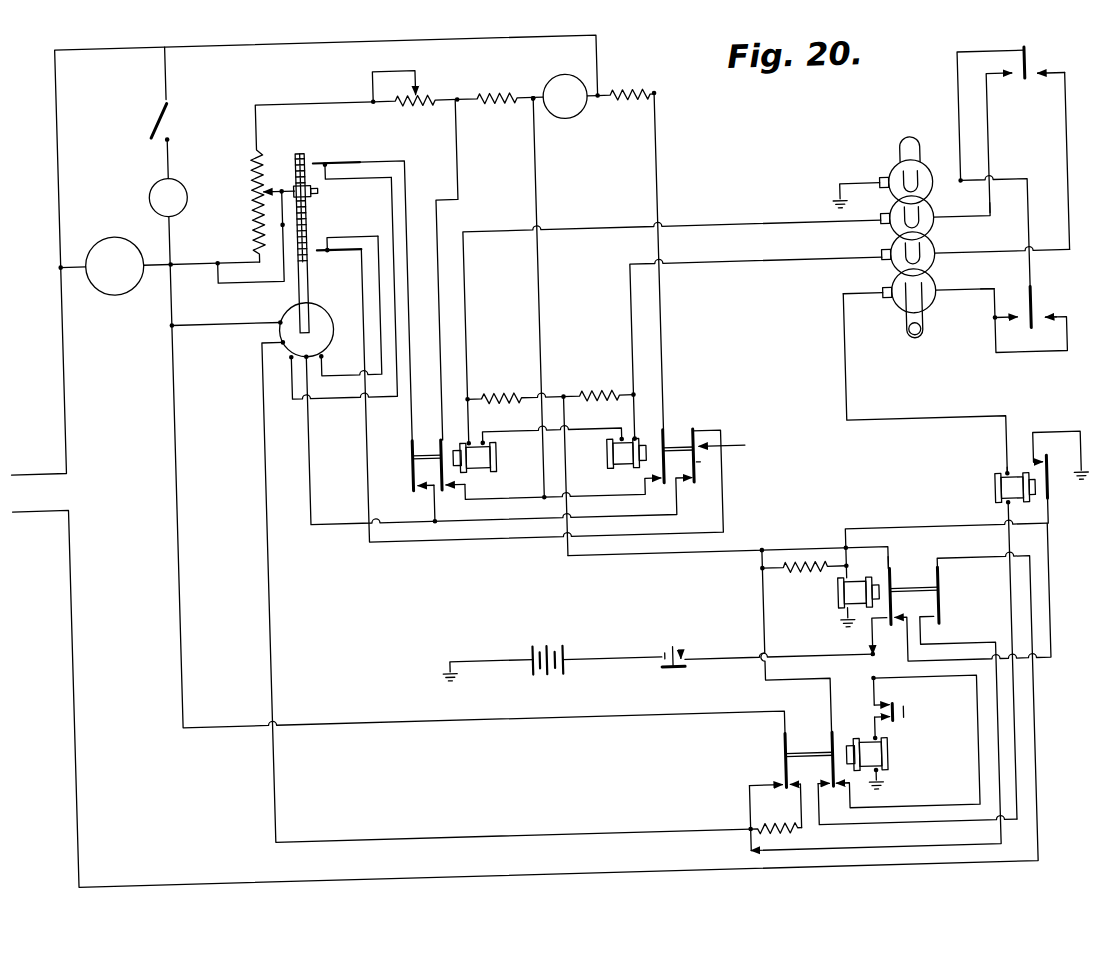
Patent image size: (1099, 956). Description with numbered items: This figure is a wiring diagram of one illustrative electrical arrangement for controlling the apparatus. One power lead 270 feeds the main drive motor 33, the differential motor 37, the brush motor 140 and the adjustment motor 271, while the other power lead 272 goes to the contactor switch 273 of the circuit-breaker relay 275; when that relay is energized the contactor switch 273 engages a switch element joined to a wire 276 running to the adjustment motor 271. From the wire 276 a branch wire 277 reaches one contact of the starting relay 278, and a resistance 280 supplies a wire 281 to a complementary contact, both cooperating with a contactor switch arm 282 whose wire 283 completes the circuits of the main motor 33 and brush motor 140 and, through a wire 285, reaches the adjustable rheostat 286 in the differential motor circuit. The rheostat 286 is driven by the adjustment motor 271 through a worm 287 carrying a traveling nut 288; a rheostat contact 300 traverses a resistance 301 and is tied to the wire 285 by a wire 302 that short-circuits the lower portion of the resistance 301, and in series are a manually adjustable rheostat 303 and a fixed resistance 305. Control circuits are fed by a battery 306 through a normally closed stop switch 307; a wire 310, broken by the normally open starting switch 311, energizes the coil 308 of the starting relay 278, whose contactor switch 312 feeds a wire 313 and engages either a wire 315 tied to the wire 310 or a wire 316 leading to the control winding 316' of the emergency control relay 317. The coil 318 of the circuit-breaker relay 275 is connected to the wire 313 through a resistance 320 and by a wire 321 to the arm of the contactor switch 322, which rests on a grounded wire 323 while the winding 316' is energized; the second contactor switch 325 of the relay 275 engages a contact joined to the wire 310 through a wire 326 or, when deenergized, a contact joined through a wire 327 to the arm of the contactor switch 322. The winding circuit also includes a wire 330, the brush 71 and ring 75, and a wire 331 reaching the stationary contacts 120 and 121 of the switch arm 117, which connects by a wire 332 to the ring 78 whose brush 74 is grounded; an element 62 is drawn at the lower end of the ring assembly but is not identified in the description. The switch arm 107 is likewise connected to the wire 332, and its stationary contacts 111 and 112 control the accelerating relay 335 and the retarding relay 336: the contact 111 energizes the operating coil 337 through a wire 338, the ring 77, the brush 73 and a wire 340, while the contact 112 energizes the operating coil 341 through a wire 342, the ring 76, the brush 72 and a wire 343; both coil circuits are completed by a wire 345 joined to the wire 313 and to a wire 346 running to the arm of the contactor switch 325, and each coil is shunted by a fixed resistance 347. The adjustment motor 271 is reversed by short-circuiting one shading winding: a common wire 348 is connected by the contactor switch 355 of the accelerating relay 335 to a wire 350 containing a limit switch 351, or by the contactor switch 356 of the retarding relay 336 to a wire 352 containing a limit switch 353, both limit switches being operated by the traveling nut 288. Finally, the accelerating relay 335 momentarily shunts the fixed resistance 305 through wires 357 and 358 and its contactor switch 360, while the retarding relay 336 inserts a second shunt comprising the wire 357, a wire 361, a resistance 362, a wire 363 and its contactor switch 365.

The power lead 270 is at (297, 37).
The power lead 272 is at (26, 498).
The brush motor 140 is at (159, 184).
The main drive motor 33 is at (119, 283).
The wire 285 is at (205, 252).
The wire 302 is at (227, 272).
The rheostat contact 300 is at (289, 183).
The resistance 301 is at (263, 182).
The adjustable rheostat 286 is at (251, 149).
The traveling nut 288 is at (327, 186).
The worm 287 is at (318, 215).
The limit switch 351 is at (346, 152).
The wire 350 is at (405, 156).
The limit switch 353 is at (335, 250).
The common wire 348 is at (307, 419).
The wire 352 is at (308, 365).
The adjustment motor 271 is at (281, 322).
The wire 283 is at (174, 386).
The wire 276 is at (263, 465).
The accelerating relay 335 is at (405, 444).
The contactor switch 355 is at (409, 474).
The contactor switch 360 is at (443, 491).
The wire 361 is at (621, 502).
The wire 358 is at (470, 163).
The wire 357 is at (553, 189).
The manually adjustable rheostat 303 is at (438, 94).
The fixed resistance 305 is at (518, 95).
The differential motor 37 is at (586, 114).
The resistance 362 is at (640, 92).
The wire 363 is at (673, 155).
The wire 340 is at (767, 232).
The wire 343 is at (768, 271).
The fixed resistance 347 is at (502, 393).
The operating coil 337 is at (500, 461).
The operating coil 341 is at (605, 460).
The wire 345 is at (560, 556).
The wire 346 is at (769, 551).
The contactor switch 365 is at (667, 431).
The retarding relay 336 is at (741, 433).
The contactor switch 356 is at (700, 467).
The wire 321 is at (841, 540).
The resistance 320 is at (777, 575).
The coil 318 is at (828, 600).
The contactor switch 325 is at (884, 574).
The circuit-breaker relay 275 is at (911, 573).
The contactor switch 273 is at (937, 596).
The wire 313 is at (751, 678).
The wire 326 is at (860, 659).
The wire 310 is at (704, 659).
The stop switch 307 is at (662, 651).
The battery 306 is at (542, 645).
The starting switch 311 is at (898, 722).
The coil 308 is at (885, 762).
The wire 315 is at (893, 815).
The starting relay 278 is at (773, 746).
The contactor switch 312 is at (822, 743).
The contactor switch arm 282 is at (770, 774).
The branch wire 277 is at (738, 791).
The wire 281 is at (789, 812).
The resistance 280 is at (749, 839).
The wire 316 is at (917, 794).
The control winding 316' is at (986, 640).
The emergency control relay 317 is at (991, 479).
The wire 330 is at (848, 354).
The contactor switch 322 is at (1049, 501).
The grounded wire 323 is at (1056, 446).
The wire 327 is at (1046, 604).
The ring 78 is at (932, 172).
The brush 74 is at (890, 187).
The brush 73 is at (886, 231).
The brush 72 is at (885, 267).
The brush 71 is at (886, 307).
The shaft 62 is at (919, 350).
The ring 77 is at (973, 145).
The ring 76 is at (1000, 162).
The ring 75 is at (1001, 308).
The switch arm 107 is at (1039, 61).
The stationary contact 111 is at (1017, 81).
The stationary contact 112 is at (1051, 82).
The wire 342 is at (1070, 121).
The wire 332 is at (1025, 189).
The wire 338 is at (1002, 220).
The switch arm 117 is at (1042, 309).
The stationary contact 121 is at (1051, 327).
The stationary contact 120 is at (1004, 334).
The wire 331 is at (968, 305).